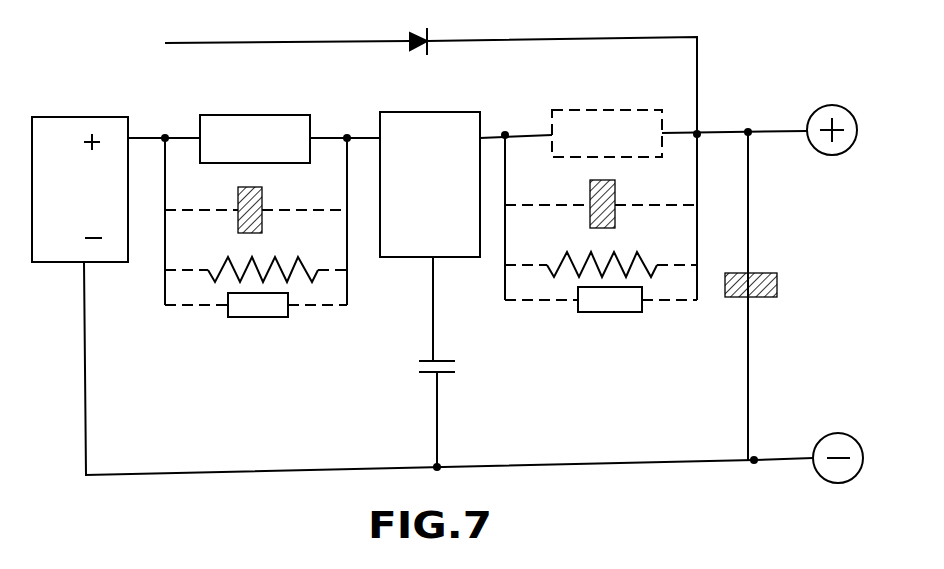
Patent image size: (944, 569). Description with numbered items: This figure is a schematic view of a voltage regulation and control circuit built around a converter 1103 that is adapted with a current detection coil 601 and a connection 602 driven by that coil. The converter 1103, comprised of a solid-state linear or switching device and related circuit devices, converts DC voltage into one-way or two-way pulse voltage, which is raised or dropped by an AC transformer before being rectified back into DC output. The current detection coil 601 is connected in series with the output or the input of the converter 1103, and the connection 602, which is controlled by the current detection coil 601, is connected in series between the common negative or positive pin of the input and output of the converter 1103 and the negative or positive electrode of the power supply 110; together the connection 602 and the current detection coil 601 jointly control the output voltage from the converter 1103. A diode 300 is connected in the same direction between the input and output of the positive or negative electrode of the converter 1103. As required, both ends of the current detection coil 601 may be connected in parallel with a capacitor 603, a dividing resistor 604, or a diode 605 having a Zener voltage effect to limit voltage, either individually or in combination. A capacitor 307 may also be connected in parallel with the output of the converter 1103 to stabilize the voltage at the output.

The power supply 110 is at (80, 115).
The current detection coil 601 is at (290, 113).
The diode 300 is at (430, 43).
The converter 1103 is at (418, 257).
The connection 602 is at (423, 378).
The capacitor 603 is at (238, 200).
The dividing resistor 604 is at (265, 267).
The diode 605 is at (252, 317).
The capacitor 307 is at (740, 300).